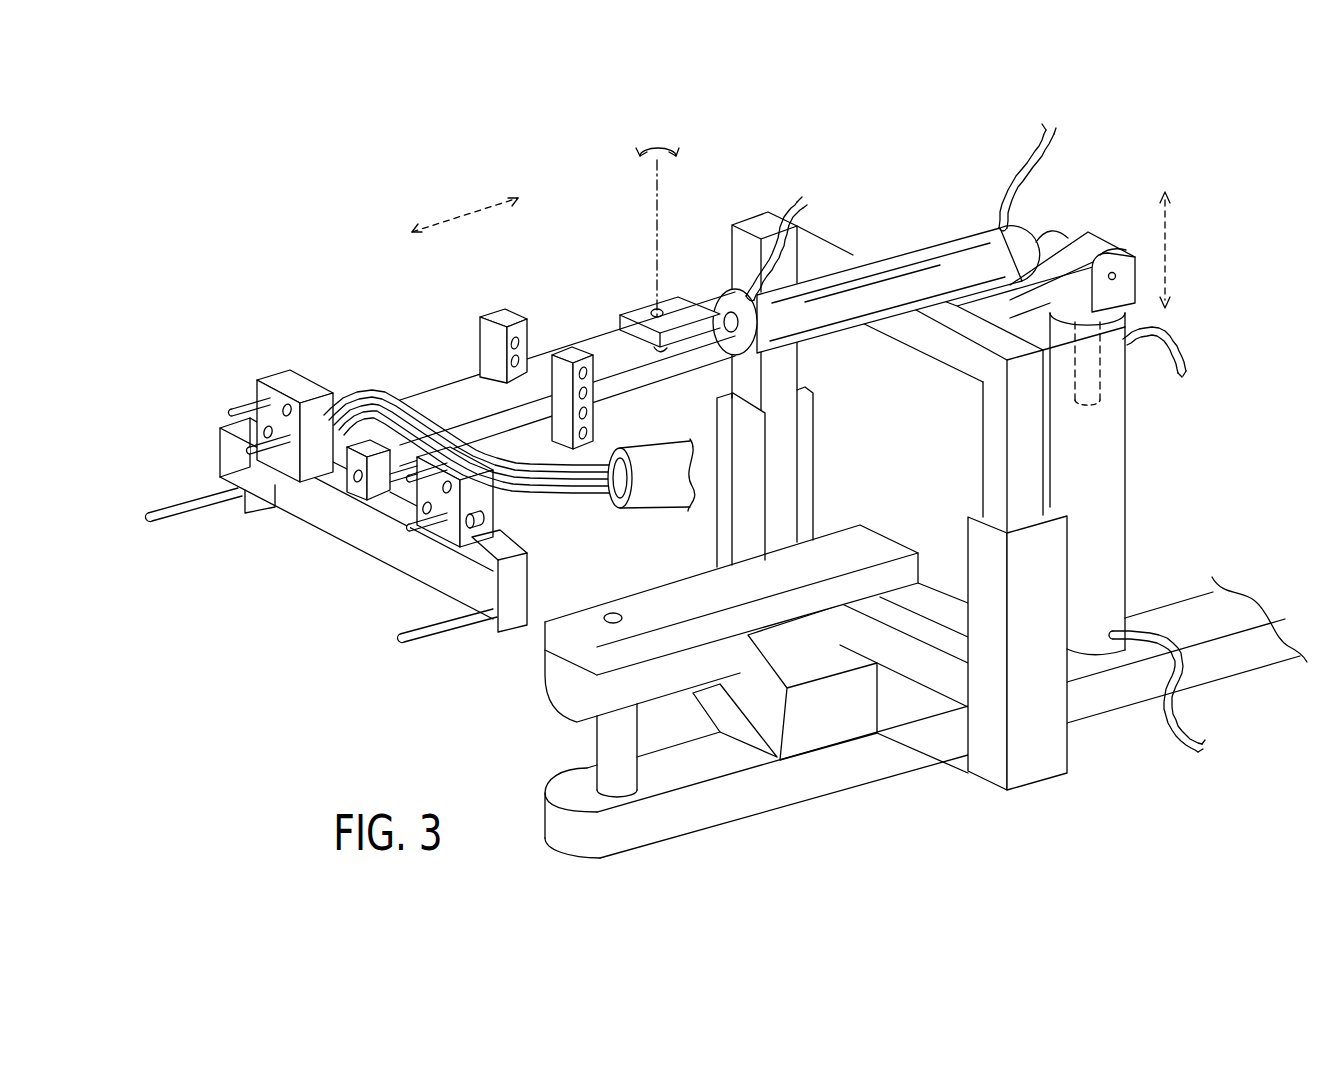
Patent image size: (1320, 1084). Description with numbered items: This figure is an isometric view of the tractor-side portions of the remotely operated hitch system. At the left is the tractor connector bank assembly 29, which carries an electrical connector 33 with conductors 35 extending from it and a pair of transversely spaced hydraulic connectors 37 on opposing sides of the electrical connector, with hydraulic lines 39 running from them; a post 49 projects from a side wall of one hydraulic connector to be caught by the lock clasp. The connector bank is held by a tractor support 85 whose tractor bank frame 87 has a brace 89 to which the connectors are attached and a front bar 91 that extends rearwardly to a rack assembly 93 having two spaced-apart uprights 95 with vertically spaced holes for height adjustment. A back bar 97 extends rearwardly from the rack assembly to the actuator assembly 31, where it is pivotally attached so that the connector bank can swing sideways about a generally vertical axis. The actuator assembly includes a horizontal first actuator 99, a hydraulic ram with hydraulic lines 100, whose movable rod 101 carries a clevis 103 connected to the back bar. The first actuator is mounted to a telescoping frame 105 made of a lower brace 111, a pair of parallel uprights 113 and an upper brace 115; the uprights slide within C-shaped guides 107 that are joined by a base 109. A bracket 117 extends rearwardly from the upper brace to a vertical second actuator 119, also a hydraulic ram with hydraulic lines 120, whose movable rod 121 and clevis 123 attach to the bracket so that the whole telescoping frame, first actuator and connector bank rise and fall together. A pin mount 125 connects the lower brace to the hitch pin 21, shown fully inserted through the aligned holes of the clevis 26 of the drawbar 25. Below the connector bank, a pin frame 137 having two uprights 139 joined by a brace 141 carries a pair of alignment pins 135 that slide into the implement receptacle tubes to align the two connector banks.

The hitch pin 21 is at (608, 754).
The drawbar 25 is at (737, 802).
The clevis 26 is at (560, 691).
The tractor connector bank assembly 29 is at (250, 376).
The actuator assembly 31 is at (973, 218).
The electrical connector 33 is at (356, 494).
The conductors 35 is at (402, 488).
The hydraulic connectors 37 is at (281, 371).
The hydraulic lines 39 is at (376, 400).
The post 49 is at (482, 522).
The tractor support 85 is at (548, 216).
The tractor bank frame 87 is at (610, 352).
The brace 89 is at (345, 405).
The front bar 91 is at (463, 398).
The rack assembly 93 is at (560, 350).
The uprights 95 is at (503, 312).
The back bar 97 is at (652, 383).
The first actuator 99 is at (905, 272).
The hydraulic lines 100 is at (771, 258).
The movable rod 101 is at (731, 310).
The clevis 103 is at (640, 316).
The telescoping frame 105 is at (1040, 414).
The guides 107 is at (1046, 760).
The base 109 is at (992, 765).
The lower brace 111 is at (936, 598).
The uprights 113 is at (810, 421).
The upper brace 115 is at (955, 343).
The bracket 117 is at (1092, 237).
The second actuator 119 is at (1110, 556).
The hydraulic lines 120 is at (1181, 346).
The movable rod 121 is at (1106, 402).
The clevis 123 is at (1116, 266).
The pin mount 125 is at (668, 630).
The pins 135 is at (196, 522).
The pin frame 137 is at (210, 455).
The uprights 139 is at (232, 479).
The brace 141 is at (298, 492).